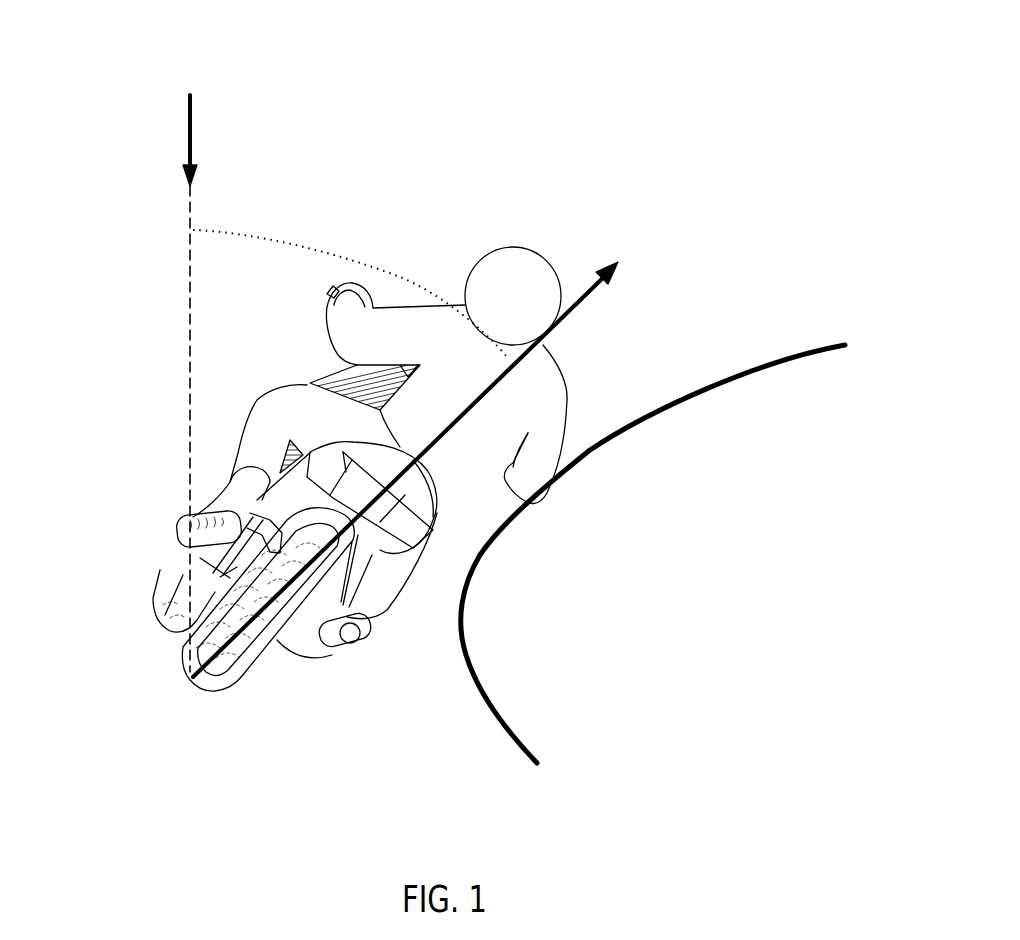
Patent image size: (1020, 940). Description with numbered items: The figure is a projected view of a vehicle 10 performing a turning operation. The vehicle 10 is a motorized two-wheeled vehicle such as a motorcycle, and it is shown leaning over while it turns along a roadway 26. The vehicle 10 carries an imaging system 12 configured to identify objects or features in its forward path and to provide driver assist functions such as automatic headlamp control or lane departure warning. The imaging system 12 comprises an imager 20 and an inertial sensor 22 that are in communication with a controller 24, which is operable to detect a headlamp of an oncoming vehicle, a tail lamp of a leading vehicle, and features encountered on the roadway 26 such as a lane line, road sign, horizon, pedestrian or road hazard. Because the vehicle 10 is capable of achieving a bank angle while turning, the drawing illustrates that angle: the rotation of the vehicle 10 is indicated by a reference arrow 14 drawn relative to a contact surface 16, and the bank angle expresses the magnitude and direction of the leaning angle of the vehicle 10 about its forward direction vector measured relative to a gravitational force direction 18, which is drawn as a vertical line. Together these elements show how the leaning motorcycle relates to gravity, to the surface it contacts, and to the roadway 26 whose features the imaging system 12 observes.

The vehicle 10 is at (427, 495).
The imaging system 12 is at (385, 289).
The reference arrow 14 is at (587, 298).
The contact surface 16 is at (143, 626).
The gravitational force direction 18 is at (190, 263).
The imager 20 is at (245, 377).
The inertial sensor 22 is at (245, 377).
The controller 24 is at (316, 360).
The roadway 26 is at (606, 399).